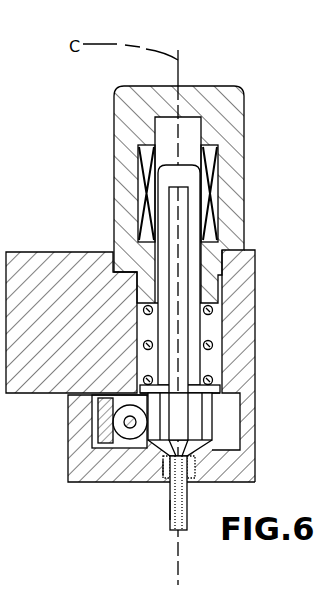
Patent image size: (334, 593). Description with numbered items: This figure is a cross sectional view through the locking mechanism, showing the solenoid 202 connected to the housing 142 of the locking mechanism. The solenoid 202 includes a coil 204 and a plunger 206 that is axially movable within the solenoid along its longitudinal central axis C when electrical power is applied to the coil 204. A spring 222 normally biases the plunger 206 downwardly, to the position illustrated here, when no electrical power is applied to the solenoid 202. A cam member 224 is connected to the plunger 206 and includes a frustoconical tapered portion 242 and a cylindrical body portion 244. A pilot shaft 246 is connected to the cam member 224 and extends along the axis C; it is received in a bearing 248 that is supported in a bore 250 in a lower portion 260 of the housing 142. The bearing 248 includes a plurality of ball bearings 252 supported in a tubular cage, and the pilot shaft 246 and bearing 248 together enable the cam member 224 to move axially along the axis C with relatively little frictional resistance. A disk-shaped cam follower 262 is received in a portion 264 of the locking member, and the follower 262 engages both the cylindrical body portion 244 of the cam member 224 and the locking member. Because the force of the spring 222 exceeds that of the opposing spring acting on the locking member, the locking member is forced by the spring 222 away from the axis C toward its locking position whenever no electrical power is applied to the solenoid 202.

The housing 142 is at (62, 278).
The solenoid 202 is at (240, 86).
The coil 204 is at (213, 188).
The plunger 206 is at (187, 170).
The spring 222 is at (212, 310).
The cam member 224 is at (215, 410).
The frustoconical tapered portion 242 is at (118, 465).
The cylindrical body portion 244 is at (245, 423).
The pilot shaft 246 is at (177, 507).
The bearing 248 is at (192, 467).
The bore 250 is at (167, 457).
The ball bearings 252 is at (198, 467).
The lower portion 260 is at (242, 467).
The cam follower 262 is at (122, 412).
The portion 264 is at (102, 430).